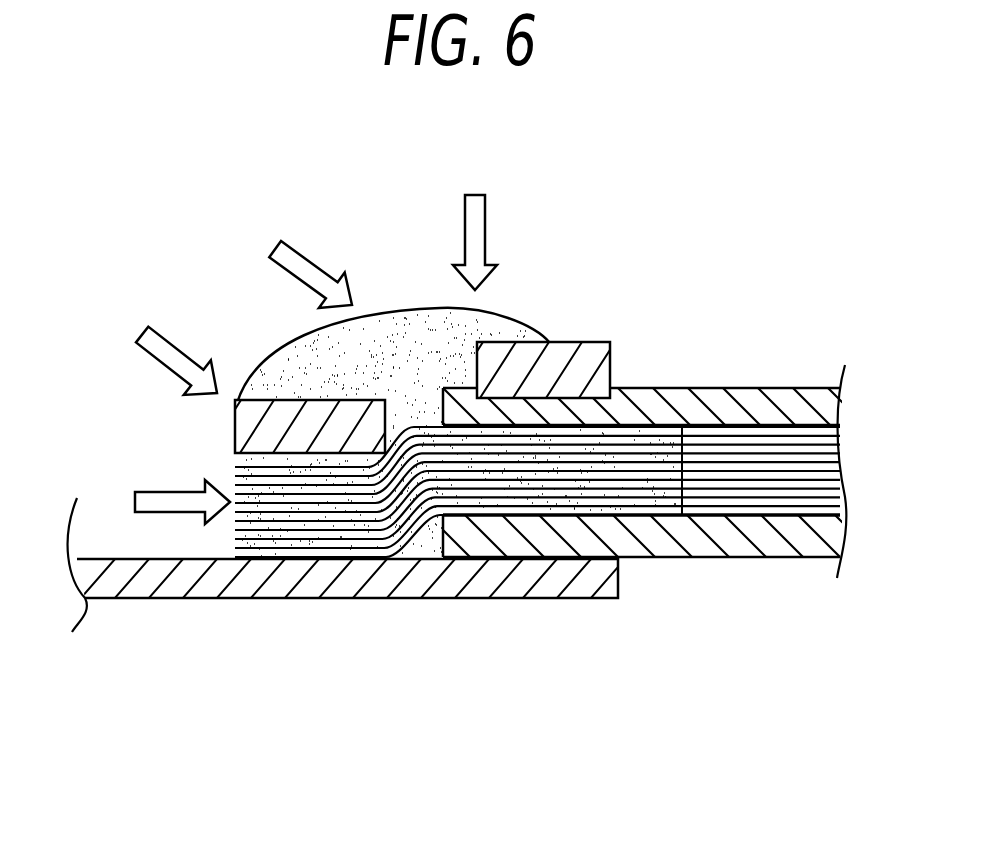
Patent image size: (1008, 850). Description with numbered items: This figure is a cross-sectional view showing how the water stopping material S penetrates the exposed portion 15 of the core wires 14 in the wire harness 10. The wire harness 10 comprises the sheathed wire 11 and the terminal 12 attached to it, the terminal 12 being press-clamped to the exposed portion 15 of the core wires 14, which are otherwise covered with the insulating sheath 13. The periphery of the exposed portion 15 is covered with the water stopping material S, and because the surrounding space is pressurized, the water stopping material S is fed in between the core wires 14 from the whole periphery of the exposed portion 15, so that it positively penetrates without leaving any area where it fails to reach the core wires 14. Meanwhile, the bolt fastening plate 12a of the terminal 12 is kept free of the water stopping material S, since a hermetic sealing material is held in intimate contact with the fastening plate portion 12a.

The wire harness 10 is at (683, 300).
The sheathed wire 11 is at (727, 382).
The terminal 12 is at (395, 600).
The bolt fastening plate 12a is at (143, 593).
The insulating sheath 13 is at (780, 382).
The core wires 14 is at (747, 483).
The exposed portion 15 is at (282, 400).
The water stopping material S is at (403, 337).